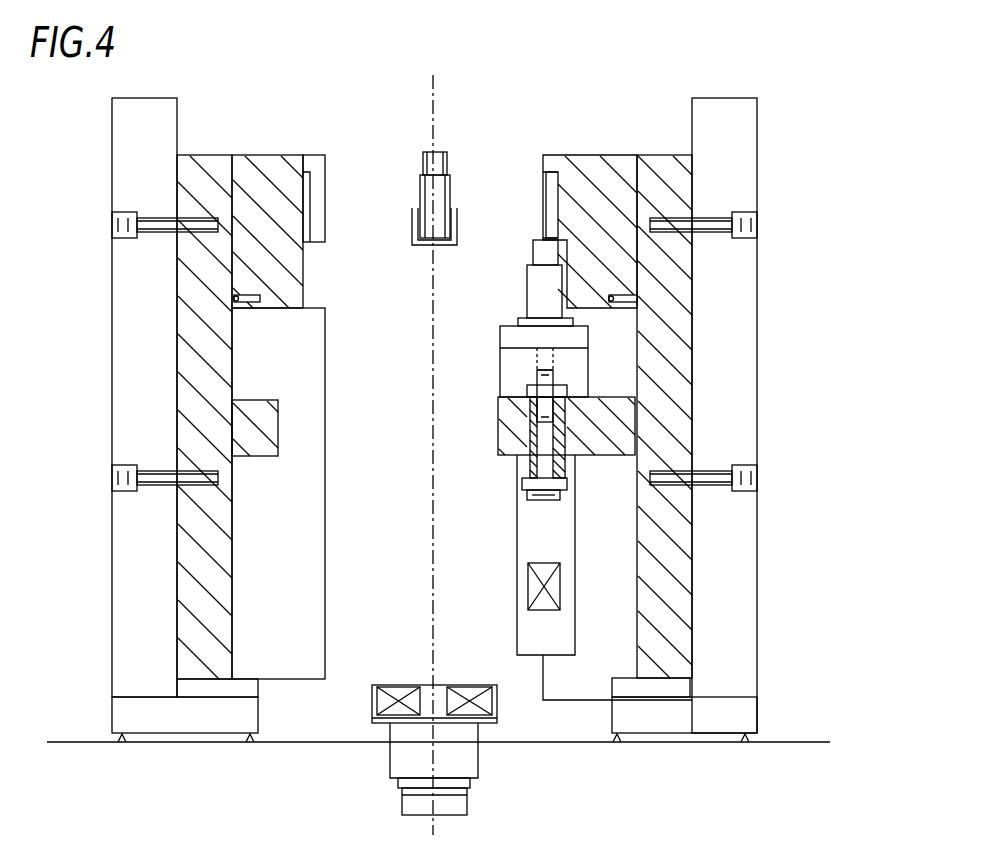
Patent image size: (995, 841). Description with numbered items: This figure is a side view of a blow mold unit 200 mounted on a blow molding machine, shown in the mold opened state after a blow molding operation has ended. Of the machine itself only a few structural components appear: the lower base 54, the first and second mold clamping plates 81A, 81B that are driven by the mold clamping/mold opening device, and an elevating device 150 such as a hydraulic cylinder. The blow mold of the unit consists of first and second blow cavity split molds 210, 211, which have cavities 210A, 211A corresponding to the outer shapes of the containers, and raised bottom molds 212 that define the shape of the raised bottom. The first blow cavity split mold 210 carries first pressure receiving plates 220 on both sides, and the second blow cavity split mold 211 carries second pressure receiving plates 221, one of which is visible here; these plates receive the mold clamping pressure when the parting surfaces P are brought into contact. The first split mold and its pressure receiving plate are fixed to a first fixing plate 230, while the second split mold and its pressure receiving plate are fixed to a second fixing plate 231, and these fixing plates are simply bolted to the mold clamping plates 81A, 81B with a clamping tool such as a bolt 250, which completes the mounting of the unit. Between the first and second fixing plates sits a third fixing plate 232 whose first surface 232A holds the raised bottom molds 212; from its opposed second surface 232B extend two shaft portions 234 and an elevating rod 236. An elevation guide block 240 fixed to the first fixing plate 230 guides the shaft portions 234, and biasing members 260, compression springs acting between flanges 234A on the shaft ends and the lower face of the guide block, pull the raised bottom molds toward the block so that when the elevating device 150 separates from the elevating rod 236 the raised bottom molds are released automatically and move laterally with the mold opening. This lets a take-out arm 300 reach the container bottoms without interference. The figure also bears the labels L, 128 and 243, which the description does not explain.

The second mold clamping plate 81B is at (112, 118).
The first mold clamping plate 81A is at (757, 118).
The second fixing plate 231 is at (207, 155).
The second blow cavity split mold 211 is at (295, 155).
The cavity 211A is at (325, 195).
The second pressure receiving plate 221 is at (295, 552).
The guide block 243 is at (278, 430).
The parting surface P is at (325, 372).
The bolt 250 is at (120, 248).
The center axis L is at (436, 100).
The workpiece 128 is at (450, 180).
The take-out arm 300 is at (412, 232).
The first blow cavity split mold 210 is at (590, 155).
The cavity 210A is at (546, 197).
The raised bottom mold 212 is at (533, 252).
The third fixing plate 232 is at (505, 372).
The first surface 232A is at (556, 352).
The second surface 232B is at (555, 390).
The shaft portion 234 is at (518, 428).
The biasing member 260 is at (528, 465).
The flange 234A is at (522, 487).
The elevation guide block 240 is at (600, 458).
The elevating rod 236 is at (517, 580).
The first pressure receiving plate 220 is at (607, 578).
The first fixing plate 230 is at (665, 155).
The blow mold unit 200 is at (838, 157).
The lower base 54 is at (316, 746).
The elevating device 150 is at (482, 758).